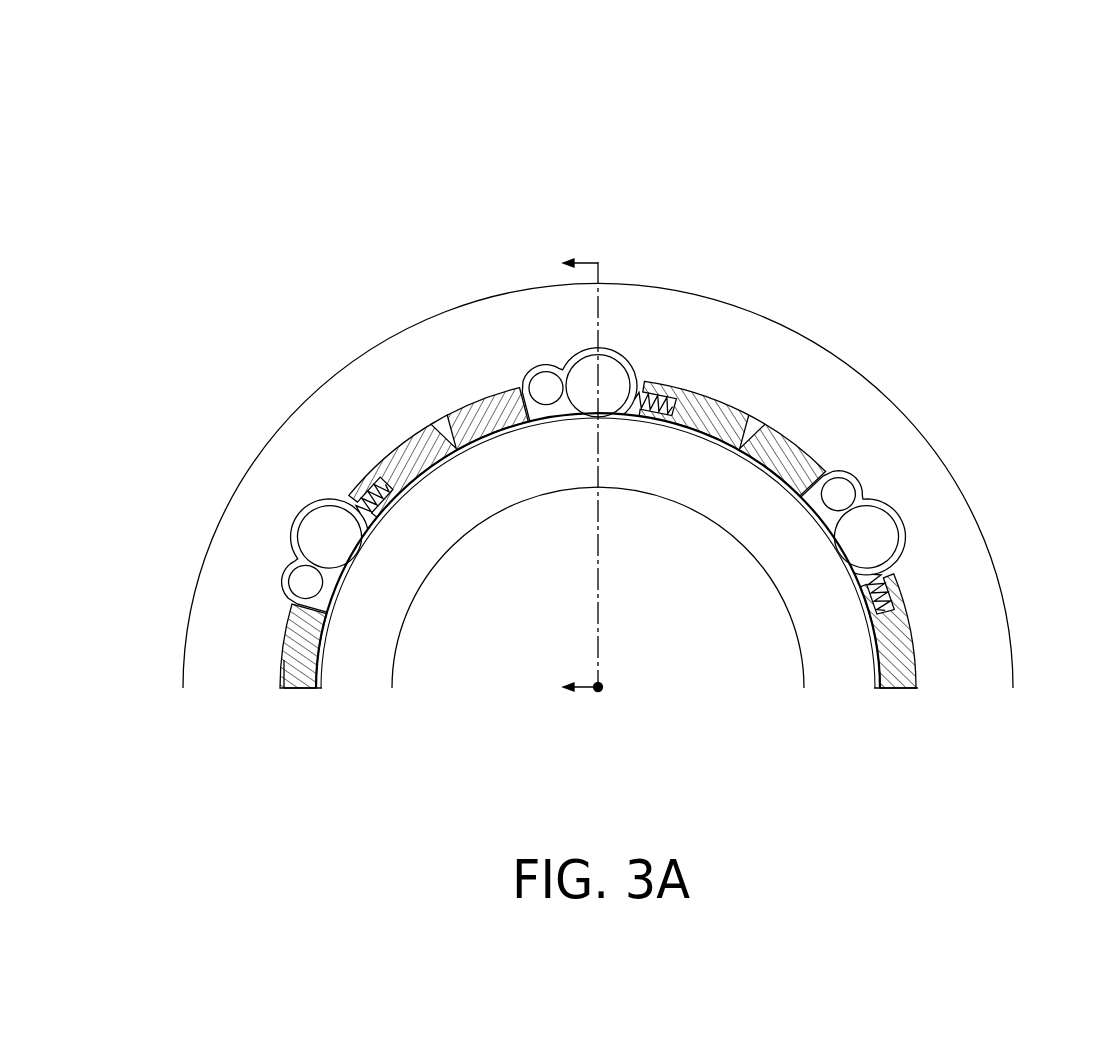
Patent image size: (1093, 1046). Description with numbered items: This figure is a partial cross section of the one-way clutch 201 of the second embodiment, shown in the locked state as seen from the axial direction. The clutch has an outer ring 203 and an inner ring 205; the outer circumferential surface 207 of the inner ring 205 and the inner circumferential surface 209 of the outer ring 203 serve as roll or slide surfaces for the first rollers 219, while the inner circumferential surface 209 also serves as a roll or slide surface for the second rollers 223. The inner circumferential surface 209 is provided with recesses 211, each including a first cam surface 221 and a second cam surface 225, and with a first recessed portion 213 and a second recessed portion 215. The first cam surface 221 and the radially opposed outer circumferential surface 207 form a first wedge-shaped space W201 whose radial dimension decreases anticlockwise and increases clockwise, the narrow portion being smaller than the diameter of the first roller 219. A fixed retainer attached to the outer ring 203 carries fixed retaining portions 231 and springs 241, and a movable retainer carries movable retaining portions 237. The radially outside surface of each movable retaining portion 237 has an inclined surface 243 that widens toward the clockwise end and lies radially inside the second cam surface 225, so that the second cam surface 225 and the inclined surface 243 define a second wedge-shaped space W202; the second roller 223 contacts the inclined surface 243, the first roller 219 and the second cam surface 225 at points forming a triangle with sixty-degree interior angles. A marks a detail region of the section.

The one-way clutch 201 is at (759, 176).
The outer ring 203 is at (203, 667).
The inner ring 205 is at (438, 548).
The outer circumferential surface of the inner ring 207 is at (320, 692).
The inner circumferential surface of the outer ring 209 is at (910, 696).
The recess 211 is at (272, 504).
The first recessed portion 213 is at (313, 474).
The second recessed portion 215 is at (269, 580).
The first roller 219 is at (298, 548).
The first cam surface 221 is at (325, 547).
The second roller 223 is at (278, 610).
The second cam surface 225 is at (305, 590).
The fixed retaining portion 231 is at (705, 398).
The movable retaining portion 237 is at (490, 437).
The spring 241 is at (372, 490).
The inclined surface 243 is at (527, 427).
The first wedge-shaped space W201 is at (612, 400).
The second wedge-shaped space W202 is at (312, 588).
The end region A is at (285, 700).